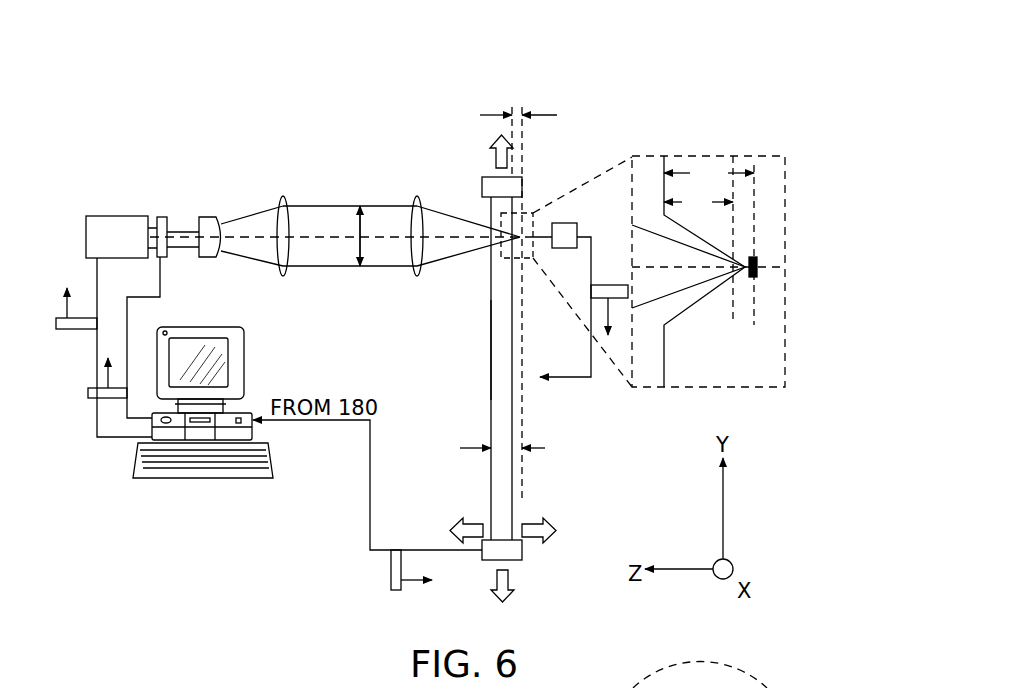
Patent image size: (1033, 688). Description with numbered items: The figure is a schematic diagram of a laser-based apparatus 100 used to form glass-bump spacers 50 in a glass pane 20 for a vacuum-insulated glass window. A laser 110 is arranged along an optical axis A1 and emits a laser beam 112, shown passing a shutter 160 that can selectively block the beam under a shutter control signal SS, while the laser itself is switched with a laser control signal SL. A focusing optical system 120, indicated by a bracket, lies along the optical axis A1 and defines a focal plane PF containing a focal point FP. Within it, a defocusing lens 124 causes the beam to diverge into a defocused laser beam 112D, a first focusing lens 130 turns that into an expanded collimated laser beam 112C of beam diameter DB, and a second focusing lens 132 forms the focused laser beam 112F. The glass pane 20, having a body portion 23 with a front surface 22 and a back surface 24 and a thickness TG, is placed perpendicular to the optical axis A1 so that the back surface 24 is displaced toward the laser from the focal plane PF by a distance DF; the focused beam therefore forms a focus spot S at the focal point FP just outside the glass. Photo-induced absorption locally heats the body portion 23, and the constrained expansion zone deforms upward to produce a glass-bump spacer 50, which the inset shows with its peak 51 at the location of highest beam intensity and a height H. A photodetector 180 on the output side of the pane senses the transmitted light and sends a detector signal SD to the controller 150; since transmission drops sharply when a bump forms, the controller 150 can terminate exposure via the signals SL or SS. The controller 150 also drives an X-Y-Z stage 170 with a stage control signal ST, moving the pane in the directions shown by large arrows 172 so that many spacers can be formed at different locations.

The laser-based apparatus 100 is at (170, 68).
The laser 110 is at (121, 237).
The laser beam 112 is at (185, 230).
The collimated laser beam 112C is at (323, 206).
The defocused laser beam 112D is at (228, 221).
The focused laser beam 112F is at (463, 215).
The focusing optical system 120 is at (433, 123).
The defocusing lens 124 is at (200, 216).
The first focusing lens 130 is at (287, 195).
The second focusing lens 132 is at (414, 195).
The controller 150 is at (244, 335).
The shutter 160 is at (163, 258).
The X-Y-Z stage 170 is at (513, 550).
The large arrows 172 is at (495, 142).
The photodetector 180 is at (560, 222).
The glass pane 20 is at (482, 373).
The front surface 22 is at (491, 356).
The body portion 23 is at (497, 393).
The back surface 24 is at (513, 502).
The glass-bump spacer 50 is at (693, 297).
The peak 51 is at (745, 273).
The optical axis A1 is at (318, 240).
The beam diameter DB is at (365, 250).
The distance DF is at (500, 113).
The focal plane PF is at (536, 113).
The focal point FP is at (528, 243).
The focus spot S is at (757, 257).
The height H is at (698, 203).
The detector signal SD is at (617, 271).
The laser control signal SL is at (73, 330).
The shutter control signal SS is at (113, 400).
The stage control signal ST is at (391, 582).
The glass pane thickness TG is at (518, 449).